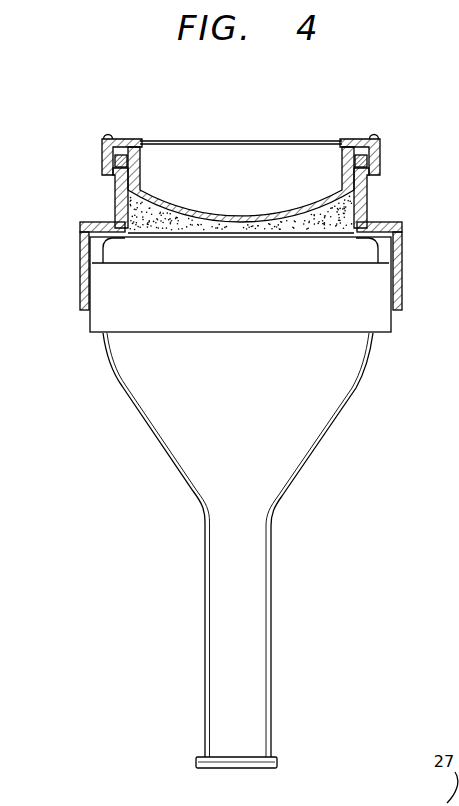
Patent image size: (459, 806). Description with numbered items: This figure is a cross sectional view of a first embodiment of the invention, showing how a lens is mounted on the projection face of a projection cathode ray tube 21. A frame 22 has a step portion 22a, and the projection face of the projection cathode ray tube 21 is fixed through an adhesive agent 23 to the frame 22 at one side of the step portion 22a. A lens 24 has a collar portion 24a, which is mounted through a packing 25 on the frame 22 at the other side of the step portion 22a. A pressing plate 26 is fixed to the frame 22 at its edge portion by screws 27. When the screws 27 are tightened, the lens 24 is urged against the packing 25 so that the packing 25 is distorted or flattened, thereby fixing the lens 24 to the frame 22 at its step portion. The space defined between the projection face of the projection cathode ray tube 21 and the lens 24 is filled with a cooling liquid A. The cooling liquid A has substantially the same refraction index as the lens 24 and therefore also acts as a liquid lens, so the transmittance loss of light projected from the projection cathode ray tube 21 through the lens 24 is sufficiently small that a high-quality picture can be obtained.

The projection cathode ray tube 21 is at (353, 395).
The frame 22 is at (105, 166).
The step portion 22a is at (116, 212).
The adhesive agent 23 is at (104, 250).
The lens 24 is at (241, 216).
The collar portion 24a is at (362, 146).
The packing 25 is at (361, 159).
The pressing plate 26 is at (197, 140).
The screws 27 is at (108, 134).
The cooling liquid A is at (347, 215).